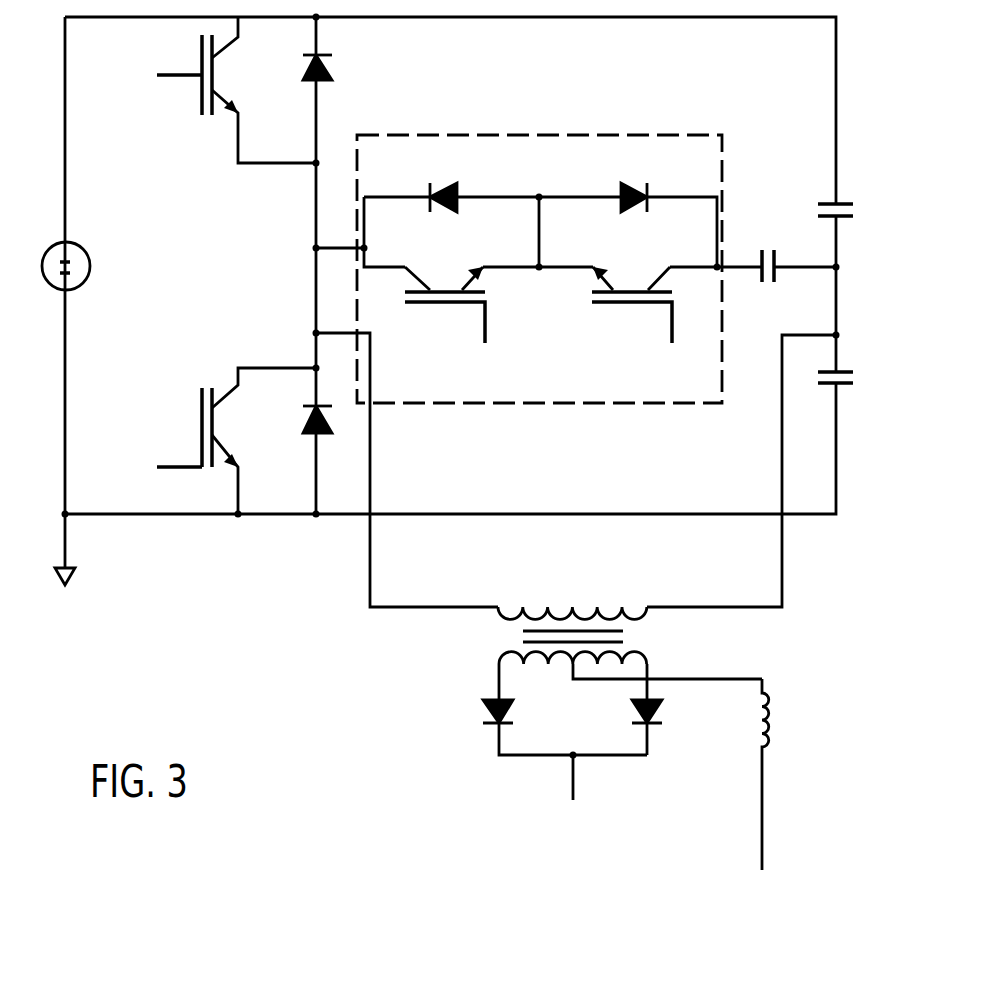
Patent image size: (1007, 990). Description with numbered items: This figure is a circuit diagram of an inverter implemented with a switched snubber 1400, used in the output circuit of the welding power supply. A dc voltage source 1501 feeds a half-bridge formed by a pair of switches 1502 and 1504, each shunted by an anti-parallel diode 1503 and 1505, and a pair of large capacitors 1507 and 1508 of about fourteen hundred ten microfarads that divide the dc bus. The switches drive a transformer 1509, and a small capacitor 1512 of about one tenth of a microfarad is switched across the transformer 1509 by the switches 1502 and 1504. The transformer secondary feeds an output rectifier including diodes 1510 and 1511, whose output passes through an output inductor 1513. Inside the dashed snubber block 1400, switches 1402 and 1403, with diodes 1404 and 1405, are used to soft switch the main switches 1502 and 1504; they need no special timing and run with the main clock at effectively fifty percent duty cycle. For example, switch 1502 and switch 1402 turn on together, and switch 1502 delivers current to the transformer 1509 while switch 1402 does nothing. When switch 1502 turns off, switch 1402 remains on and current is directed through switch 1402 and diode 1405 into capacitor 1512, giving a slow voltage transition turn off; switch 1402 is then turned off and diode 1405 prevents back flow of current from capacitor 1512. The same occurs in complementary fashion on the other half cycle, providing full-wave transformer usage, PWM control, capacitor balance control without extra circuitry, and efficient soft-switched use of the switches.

The switched snubber 1400 is at (559, 247).
The switch 1402 is at (483, 322).
The switch 1403 is at (673, 320).
The diode 1404 is at (440, 183).
The diode 1405 is at (623, 183).
The dc voltage source 1501 is at (47, 253).
The switch 1502 is at (182, 75).
The anti-parallel diode 1503 is at (334, 67).
The switch 1504 is at (200, 412).
The anti-parallel diode 1505 is at (307, 432).
The capacitor 1507 is at (828, 198).
The capacitor 1508 is at (842, 383).
The transformer 1509 is at (643, 618).
The diode 1510 is at (508, 707).
The diode 1511 is at (660, 712).
The capacitor 1512 is at (760, 250).
The output inductor 1513 is at (773, 713).